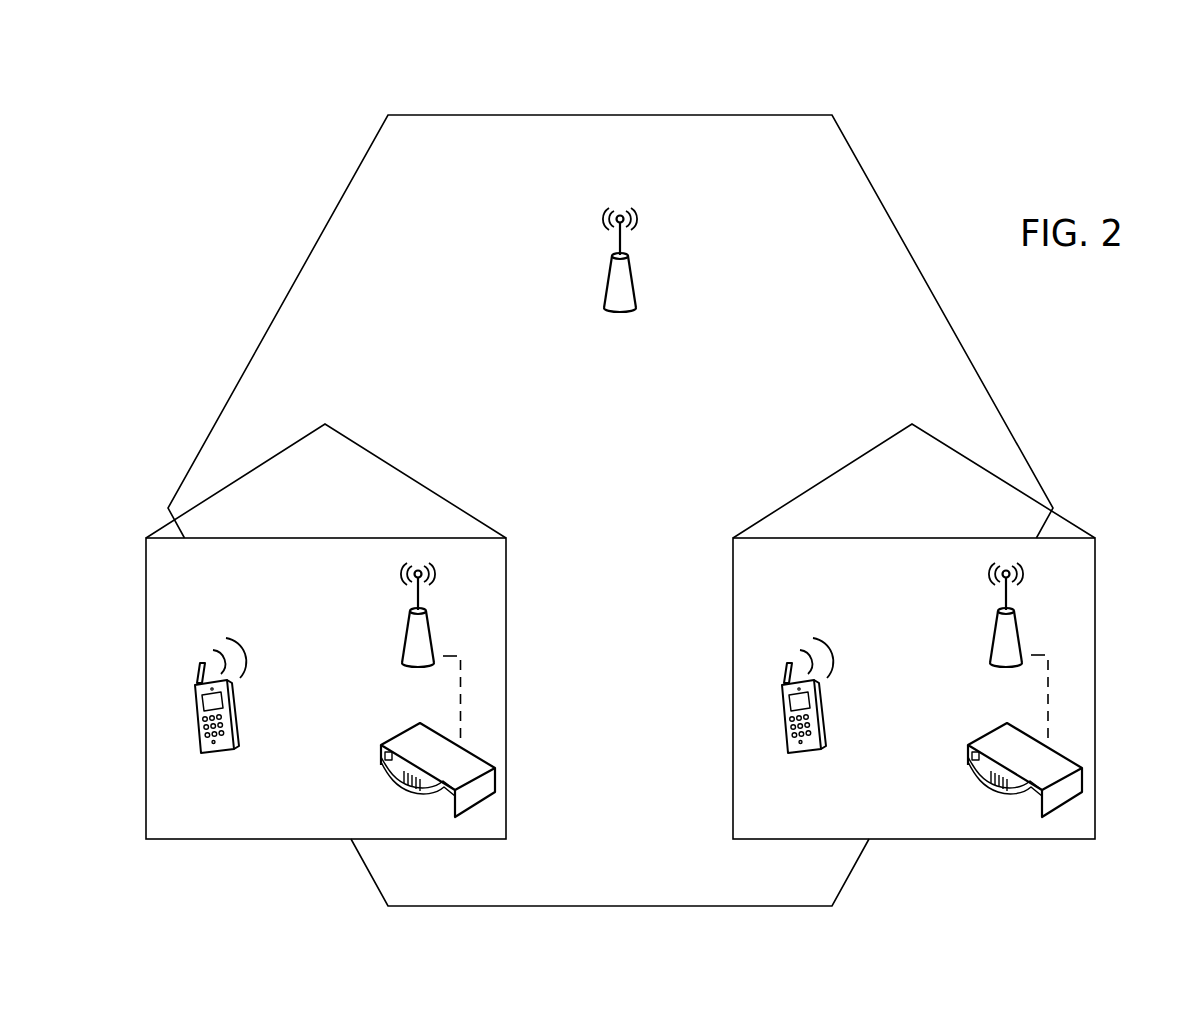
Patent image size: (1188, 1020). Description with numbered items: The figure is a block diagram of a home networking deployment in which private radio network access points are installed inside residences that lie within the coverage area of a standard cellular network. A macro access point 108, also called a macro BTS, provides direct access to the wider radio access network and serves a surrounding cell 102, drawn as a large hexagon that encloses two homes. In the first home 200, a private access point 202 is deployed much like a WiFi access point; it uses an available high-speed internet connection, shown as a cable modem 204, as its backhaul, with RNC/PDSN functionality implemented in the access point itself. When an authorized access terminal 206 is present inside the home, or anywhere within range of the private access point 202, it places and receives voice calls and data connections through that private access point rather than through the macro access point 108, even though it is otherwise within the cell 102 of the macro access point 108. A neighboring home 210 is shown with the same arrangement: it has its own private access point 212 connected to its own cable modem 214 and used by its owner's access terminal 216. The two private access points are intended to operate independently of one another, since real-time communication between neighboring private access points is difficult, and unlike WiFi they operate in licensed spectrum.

The cell 102 is at (333, 184).
The macro access point 108 is at (601, 307).
The home 200 is at (268, 840).
The private access point 202 is at (403, 663).
The cable modem 204 is at (435, 777).
The access terminal 206 is at (196, 742).
The neighboring home 210 is at (838, 840).
The private access point 212 is at (991, 663).
The cable modem 214 is at (1022, 775).
The access terminal 216 is at (783, 742).